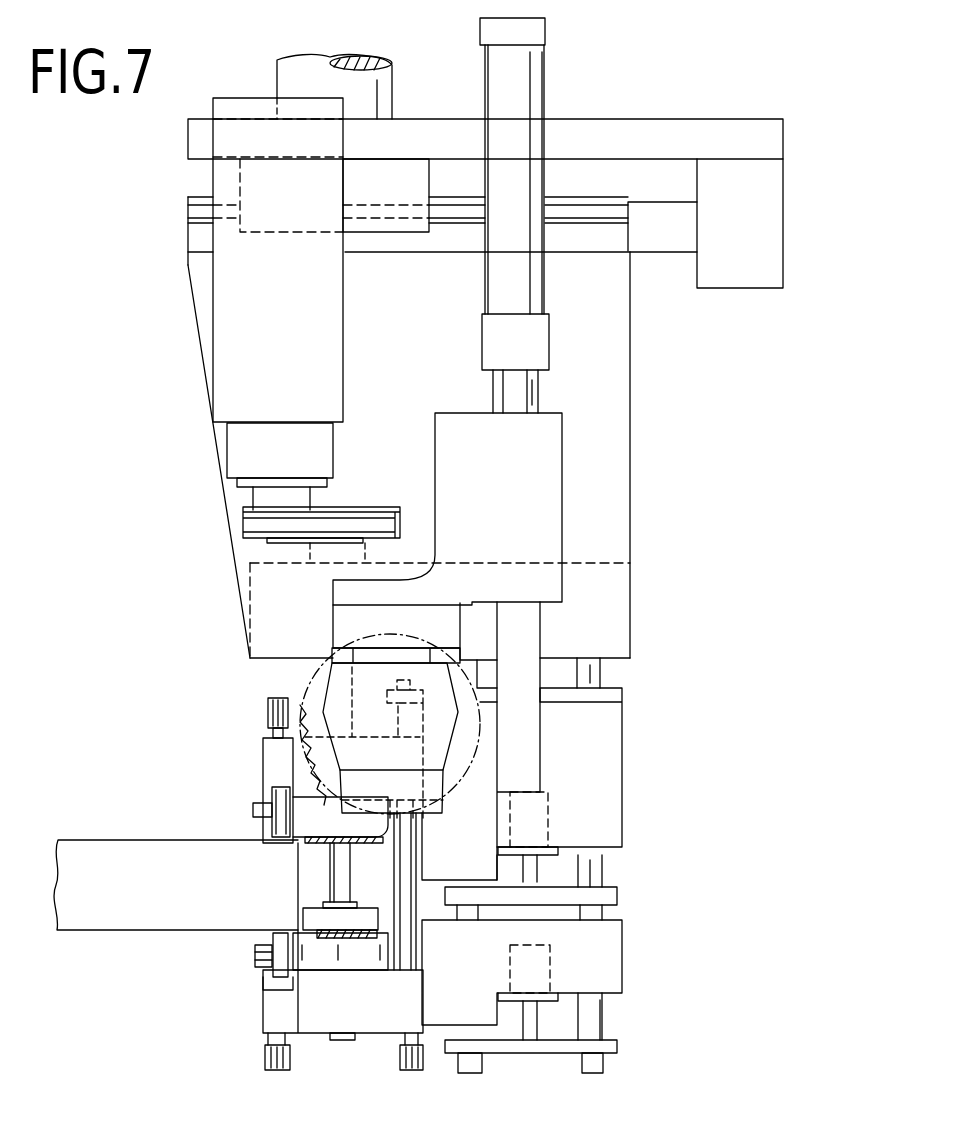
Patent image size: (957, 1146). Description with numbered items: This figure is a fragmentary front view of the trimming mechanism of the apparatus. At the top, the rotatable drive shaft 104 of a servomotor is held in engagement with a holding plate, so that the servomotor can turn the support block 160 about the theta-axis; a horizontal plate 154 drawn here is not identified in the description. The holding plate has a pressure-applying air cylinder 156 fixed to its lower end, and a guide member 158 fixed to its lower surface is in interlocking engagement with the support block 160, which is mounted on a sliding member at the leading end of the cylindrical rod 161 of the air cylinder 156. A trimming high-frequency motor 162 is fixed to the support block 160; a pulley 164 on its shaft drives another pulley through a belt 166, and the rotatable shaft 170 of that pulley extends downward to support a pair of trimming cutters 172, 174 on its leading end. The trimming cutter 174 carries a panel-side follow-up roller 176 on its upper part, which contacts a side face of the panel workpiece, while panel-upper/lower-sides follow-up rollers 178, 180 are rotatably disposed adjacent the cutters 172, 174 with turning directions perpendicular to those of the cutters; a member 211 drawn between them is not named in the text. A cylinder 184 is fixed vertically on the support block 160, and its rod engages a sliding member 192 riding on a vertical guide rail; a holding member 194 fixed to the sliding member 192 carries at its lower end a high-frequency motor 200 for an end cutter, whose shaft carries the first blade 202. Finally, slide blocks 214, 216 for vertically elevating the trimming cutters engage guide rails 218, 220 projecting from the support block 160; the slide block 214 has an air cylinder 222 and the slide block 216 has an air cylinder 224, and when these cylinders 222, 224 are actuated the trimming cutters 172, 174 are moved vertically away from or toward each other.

The rotatable drive shaft 104 is at (385, 75).
The top plate 154 is at (635, 135).
The pressure-applying air cylinder 156 is at (773, 240).
The guide member 158 is at (413, 173).
The support block 160 is at (651, 486).
The cylindrical rod 161 is at (665, 235).
The trimming high-frequency motor 162 is at (335, 357).
The pulley 164 is at (312, 507).
The belt 166 is at (373, 522).
The rotatable shaft 170 is at (300, 668).
The trimming cutter 172 is at (318, 808).
The trimming cutter 174 is at (358, 950).
The panel-side follow-up roller 176 is at (300, 912).
The panel-upper/lower-sides follow-up roller 178 is at (268, 830).
The panel-upper/lower-sides follow-up roller 180 is at (270, 975).
The cylinder 184 is at (548, 73).
The sliding member 192 is at (548, 515).
The holding member 194 is at (352, 628).
The high-frequency motor for end cutter 200 is at (440, 742).
The first blade 202 is at (268, 722).
The shaft 211 is at (335, 878).
The slide block 214 is at (604, 826).
The slide block 216 is at (606, 940).
The guide rail 218 is at (605, 684).
The guide rail 220 is at (463, 1037).
The air cylinder 222 is at (540, 812).
The air cylinder 224 is at (540, 975).